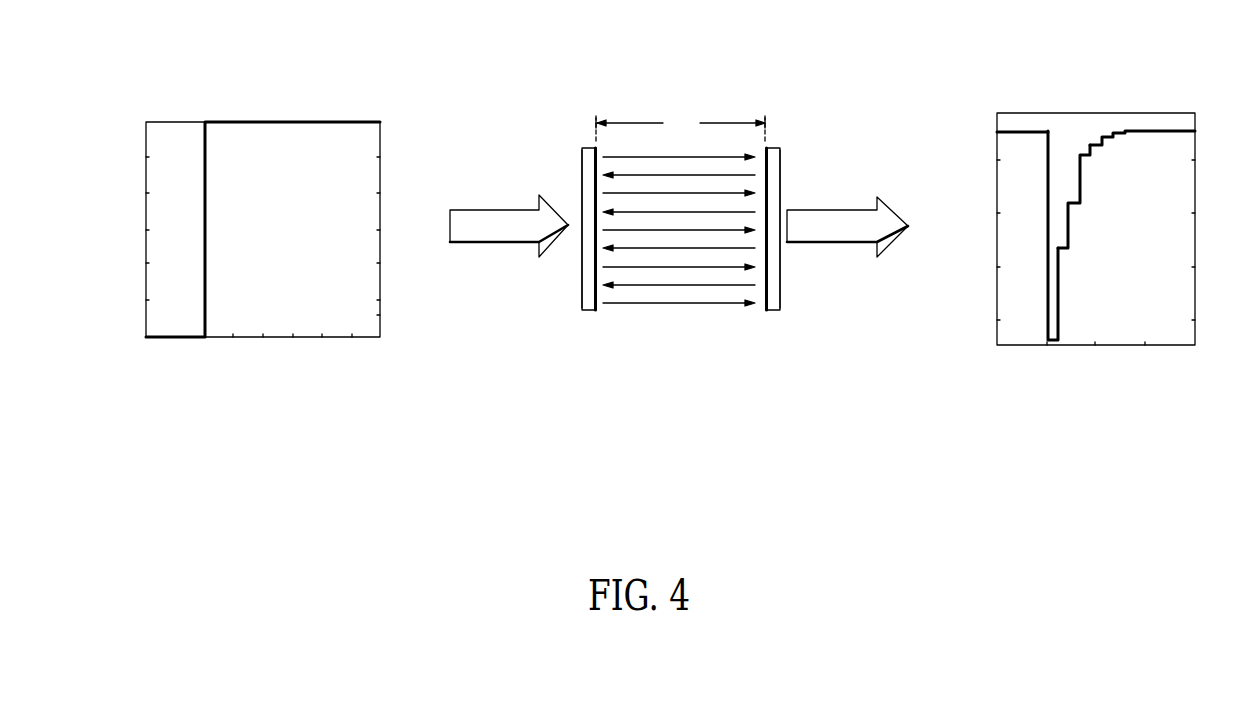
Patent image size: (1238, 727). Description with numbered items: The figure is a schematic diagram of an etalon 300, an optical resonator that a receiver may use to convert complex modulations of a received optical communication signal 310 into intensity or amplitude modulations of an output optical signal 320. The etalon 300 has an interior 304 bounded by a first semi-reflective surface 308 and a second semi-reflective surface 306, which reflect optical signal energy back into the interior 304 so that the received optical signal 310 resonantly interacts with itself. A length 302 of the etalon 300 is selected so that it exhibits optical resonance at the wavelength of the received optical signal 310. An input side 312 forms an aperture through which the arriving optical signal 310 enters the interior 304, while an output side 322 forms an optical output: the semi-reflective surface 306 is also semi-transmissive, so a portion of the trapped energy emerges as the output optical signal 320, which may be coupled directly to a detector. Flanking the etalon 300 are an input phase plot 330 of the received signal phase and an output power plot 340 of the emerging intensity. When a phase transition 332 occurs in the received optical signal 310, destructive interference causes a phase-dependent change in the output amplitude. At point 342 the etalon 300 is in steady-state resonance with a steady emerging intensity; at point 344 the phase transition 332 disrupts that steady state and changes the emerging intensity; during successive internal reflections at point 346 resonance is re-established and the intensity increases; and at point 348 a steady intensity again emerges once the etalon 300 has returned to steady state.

The etalon 300 is at (740, 45).
The length 302 is at (680, 127).
The interior 304 is at (682, 318).
The second semi-reflective surface 306 is at (753, 318).
The first semi-reflective surface 308 is at (603, 318).
The received optical communication signal 310 is at (492, 209).
The input side 312 is at (577, 175).
The output optical signal 320 is at (826, 209).
The output side 322 is at (785, 175).
The input phase plot 330 is at (244, 205).
The phase transition 332 is at (203, 112).
The output power plot 340 is at (1085, 68).
The point 342 is at (1017, 120).
The point 344 is at (1052, 148).
The point 346 is at (1074, 230).
The point 348 is at (1155, 135).